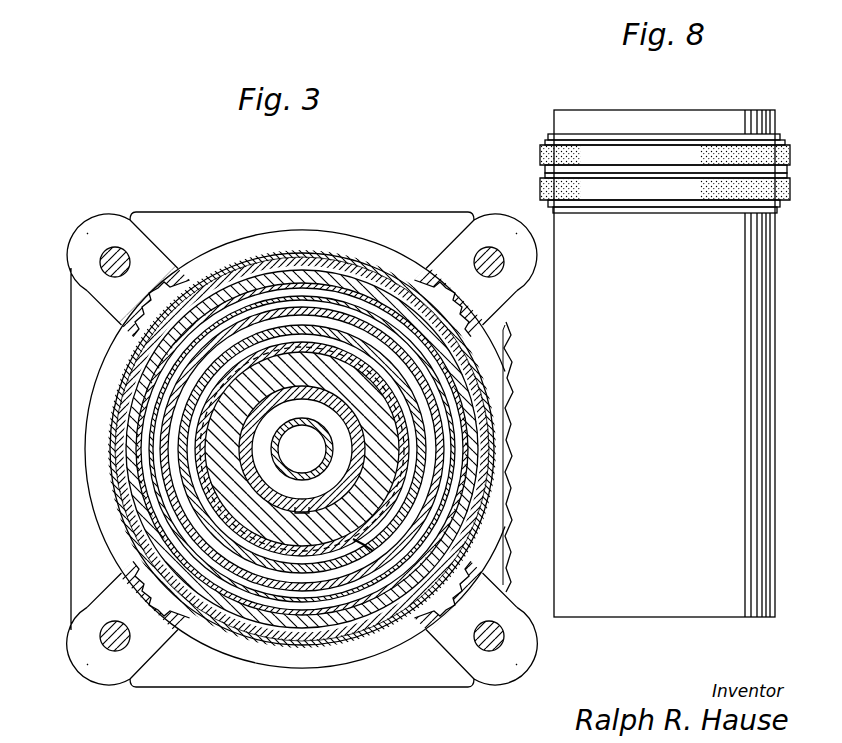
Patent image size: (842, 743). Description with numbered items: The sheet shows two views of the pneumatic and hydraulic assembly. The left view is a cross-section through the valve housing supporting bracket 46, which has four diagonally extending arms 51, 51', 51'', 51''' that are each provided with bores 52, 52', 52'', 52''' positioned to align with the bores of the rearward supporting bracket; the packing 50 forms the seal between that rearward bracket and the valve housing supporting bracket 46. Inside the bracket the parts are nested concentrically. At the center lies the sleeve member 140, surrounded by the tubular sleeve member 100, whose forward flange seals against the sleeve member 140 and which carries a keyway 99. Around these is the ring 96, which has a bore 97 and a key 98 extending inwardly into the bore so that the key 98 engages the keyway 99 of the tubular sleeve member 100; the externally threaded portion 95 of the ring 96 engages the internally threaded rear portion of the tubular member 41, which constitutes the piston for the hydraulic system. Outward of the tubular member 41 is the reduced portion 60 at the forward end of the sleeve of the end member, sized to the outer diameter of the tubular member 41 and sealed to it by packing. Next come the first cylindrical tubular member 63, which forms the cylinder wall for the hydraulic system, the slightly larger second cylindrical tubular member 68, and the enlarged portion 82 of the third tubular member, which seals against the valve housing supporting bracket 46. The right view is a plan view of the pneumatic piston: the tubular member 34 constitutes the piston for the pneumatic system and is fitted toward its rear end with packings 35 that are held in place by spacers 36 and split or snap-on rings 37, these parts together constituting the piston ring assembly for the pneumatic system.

In FIG. 3, the packing 50 is at (112, 447).
In FIG. 3, the diagonally extending arm 51 is at (109, 206).
In FIG. 3, the bore 52 is at (85, 245).
In FIG. 3, the diagonally extending arm 51' is at (493, 206).
In FIG. 3, the bore 52' is at (459, 227).
In FIG. 3, the diagonally extending arm 51'' is at (551, 650).
In FIG. 3, the bore 52'' is at (519, 653).
In FIG. 3, the diagonally extending arm 51''' is at (58, 650).
In FIG. 3, the bore 52''' is at (101, 667).
In FIG. 3, the sleeve member 140 is at (328, 430).
In FIG. 3, the keyway 99 is at (302, 465).
In FIG. 3, the bore 97 is at (334, 481).
In FIG. 3, the valve housing supporting bracket 46 is at (358, 452).
In FIG. 3, the key 98 is at (298, 507).
In FIG. 3, the ring 96 is at (392, 431).
In FIG. 3, the tubular sleeve member 100 is at (420, 455).
In FIG. 3, the portion of reduced internal diametric dimension 60 is at (180, 489).
In FIG. 3, the tubular member 41 is at (177, 462).
In FIG. 3, the first cylindrical tubular member 63 is at (157, 424).
In FIG. 3, the second cylindrical tubular member 68 is at (152, 404).
In FIG. 3, the enlarged portion 82 is at (140, 384).
In FIG. 3, the externally threaded portion 95 is at (362, 546).
In FIG. 8, the tubular member 34 is at (765, 402).
In FIG. 8, the split or snap-on ring 37 is at (550, 132).
In FIG. 8, the spacer 36 is at (548, 142).
In FIG. 8, the packing 35 is at (791, 160).